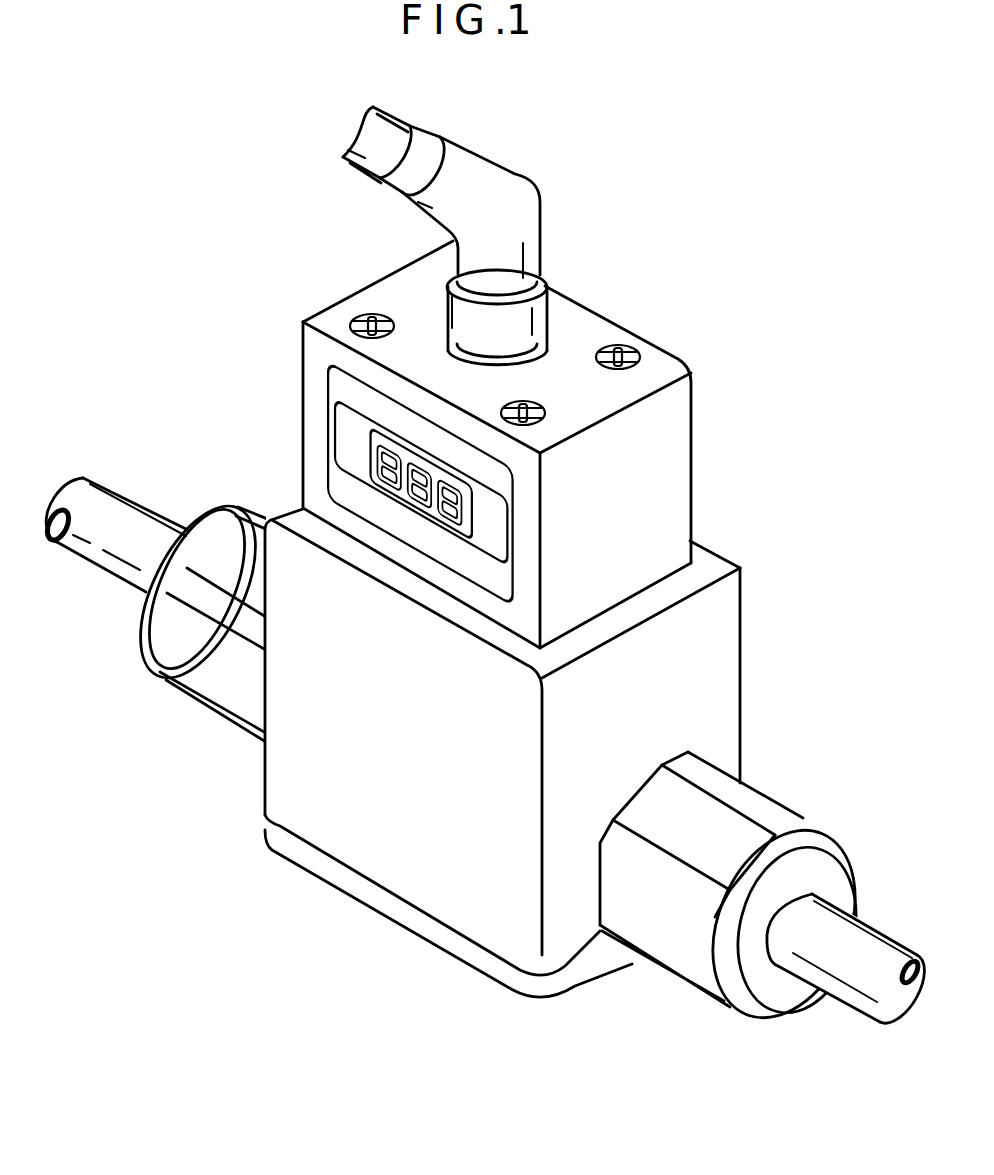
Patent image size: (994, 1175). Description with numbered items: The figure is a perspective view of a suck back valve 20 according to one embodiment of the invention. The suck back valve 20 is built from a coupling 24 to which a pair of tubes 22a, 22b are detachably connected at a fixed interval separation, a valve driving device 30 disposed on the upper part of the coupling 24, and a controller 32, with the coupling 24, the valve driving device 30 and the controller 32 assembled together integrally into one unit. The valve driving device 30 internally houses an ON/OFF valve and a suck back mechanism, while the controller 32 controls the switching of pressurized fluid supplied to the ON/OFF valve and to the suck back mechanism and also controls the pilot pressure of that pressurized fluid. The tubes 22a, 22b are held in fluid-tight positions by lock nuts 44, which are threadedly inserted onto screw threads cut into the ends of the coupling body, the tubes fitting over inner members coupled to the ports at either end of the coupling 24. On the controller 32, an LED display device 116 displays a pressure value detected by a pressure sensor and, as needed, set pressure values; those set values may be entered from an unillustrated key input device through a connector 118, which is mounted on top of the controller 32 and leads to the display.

The suck back valve 20 is at (697, 175).
The valve driving device 30 is at (714, 655).
The controller 32 is at (661, 476).
The LED display device 116 is at (492, 530).
The connector 118 is at (545, 305).
The coupling 24 is at (499, 764).
The lock nut 44 is at (187, 668).
The tube 22a is at (130, 528).
The tube 22b is at (860, 940).